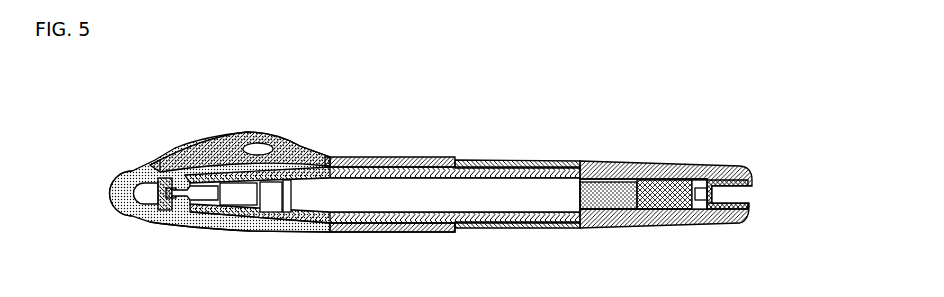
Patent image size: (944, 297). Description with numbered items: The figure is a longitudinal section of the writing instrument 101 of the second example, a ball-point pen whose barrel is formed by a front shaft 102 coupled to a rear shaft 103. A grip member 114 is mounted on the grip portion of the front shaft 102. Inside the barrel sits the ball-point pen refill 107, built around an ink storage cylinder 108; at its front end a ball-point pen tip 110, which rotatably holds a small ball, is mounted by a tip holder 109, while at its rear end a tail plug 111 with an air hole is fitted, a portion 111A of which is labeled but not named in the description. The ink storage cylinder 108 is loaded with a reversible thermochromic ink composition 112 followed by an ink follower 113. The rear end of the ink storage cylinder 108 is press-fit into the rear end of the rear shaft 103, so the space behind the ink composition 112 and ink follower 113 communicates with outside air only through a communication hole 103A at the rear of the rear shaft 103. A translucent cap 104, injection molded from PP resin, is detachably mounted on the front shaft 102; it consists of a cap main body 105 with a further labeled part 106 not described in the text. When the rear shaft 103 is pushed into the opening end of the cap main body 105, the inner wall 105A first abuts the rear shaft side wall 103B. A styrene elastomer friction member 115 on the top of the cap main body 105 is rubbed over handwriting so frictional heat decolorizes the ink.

The writing instrument 101 is at (497, 160).
The front shaft 102 is at (403, 157).
The rear shaft 103 is at (470, 233).
The communication hole 103A is at (743, 193).
The rear shaft side wall 103B is at (658, 165).
The cap 104 is at (172, 122).
The cap main body 105 is at (132, 173).
The cap main body inner wall 105A is at (210, 150).
The hood base 106 is at (157, 163).
The ball-point pen refill 107 is at (520, 197).
The ink storage cylinder 108 is at (558, 188).
The tip holder 109 is at (260, 227).
The ball-point pen tip 110 is at (180, 200).
The tail plug 111 is at (728, 173).
The connector lower arm 111A is at (728, 217).
The ink composition for a writing instrument 112 is at (605, 198).
The ink follower 113 is at (658, 207).
The grip member 114 is at (343, 230).
The friction member 115 is at (118, 213).